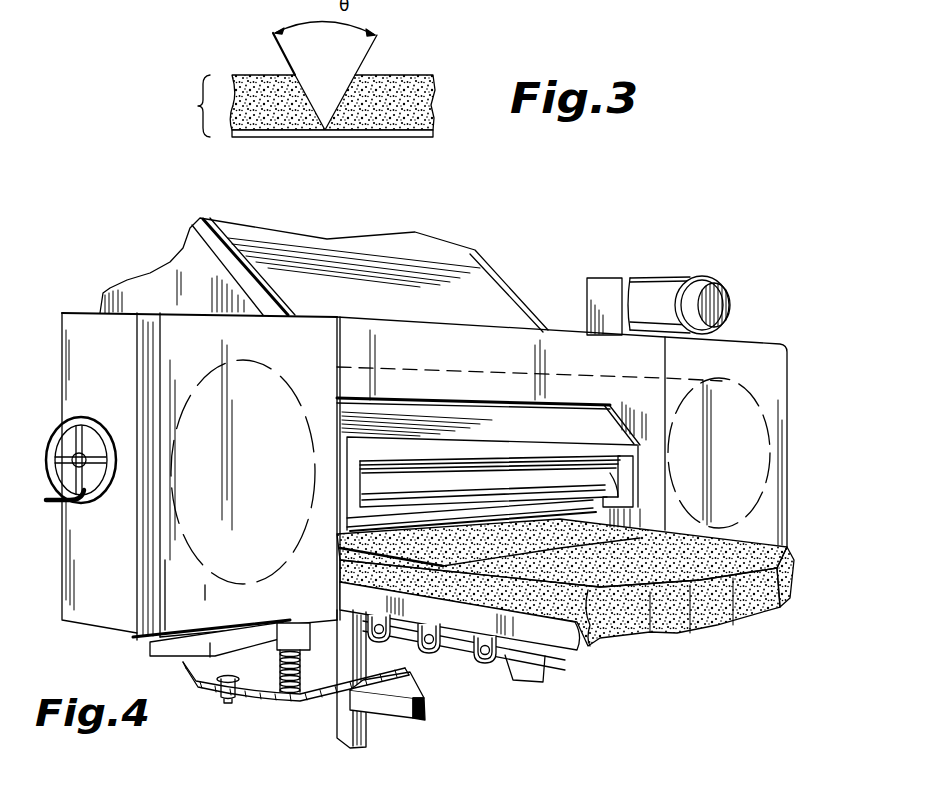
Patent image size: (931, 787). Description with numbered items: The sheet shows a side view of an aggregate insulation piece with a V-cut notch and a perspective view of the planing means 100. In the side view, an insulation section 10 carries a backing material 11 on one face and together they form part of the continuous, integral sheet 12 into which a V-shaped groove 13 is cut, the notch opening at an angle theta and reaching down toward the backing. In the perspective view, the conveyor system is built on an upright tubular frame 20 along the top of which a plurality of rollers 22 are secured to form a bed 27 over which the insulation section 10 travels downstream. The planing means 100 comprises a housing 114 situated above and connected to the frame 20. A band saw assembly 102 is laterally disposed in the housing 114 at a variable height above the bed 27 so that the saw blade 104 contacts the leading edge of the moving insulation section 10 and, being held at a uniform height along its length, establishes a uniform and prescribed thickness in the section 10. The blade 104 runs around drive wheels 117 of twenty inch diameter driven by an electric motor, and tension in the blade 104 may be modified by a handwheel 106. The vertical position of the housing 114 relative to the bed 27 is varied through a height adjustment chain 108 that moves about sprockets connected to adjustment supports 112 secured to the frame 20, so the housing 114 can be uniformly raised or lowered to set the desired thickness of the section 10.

In FIG. 3, the insulation section 10 is at (434, 86).
In FIG. 4, the insulation section 10 is at (599, 643).
In FIG. 3, the backing material 11 is at (428, 138).
In FIG. 3, the integral sheet 12 is at (199, 104).
In FIG. 3, the groove 13 is at (373, 83).
In FIG. 4, the frame 20 is at (397, 711).
In FIG. 4, the rollers 22 is at (507, 664).
In FIG. 4, the bed 27 is at (548, 645).
In FIG. 4, the planing means 100 is at (424, 497).
In FIG. 4, the band saw assembly 102 is at (190, 387).
In FIG. 4, the saw blade 104 is at (677, 278).
In FIG. 4, the handwheel 106 is at (52, 510).
In FIG. 4, the height adjustment chain 108 is at (258, 701).
In FIG. 4, the adjustment supports 112 is at (293, 703).
In FIG. 4, the housing 114 is at (220, 315).
In FIG. 4, the drive wheels 117 is at (206, 580).